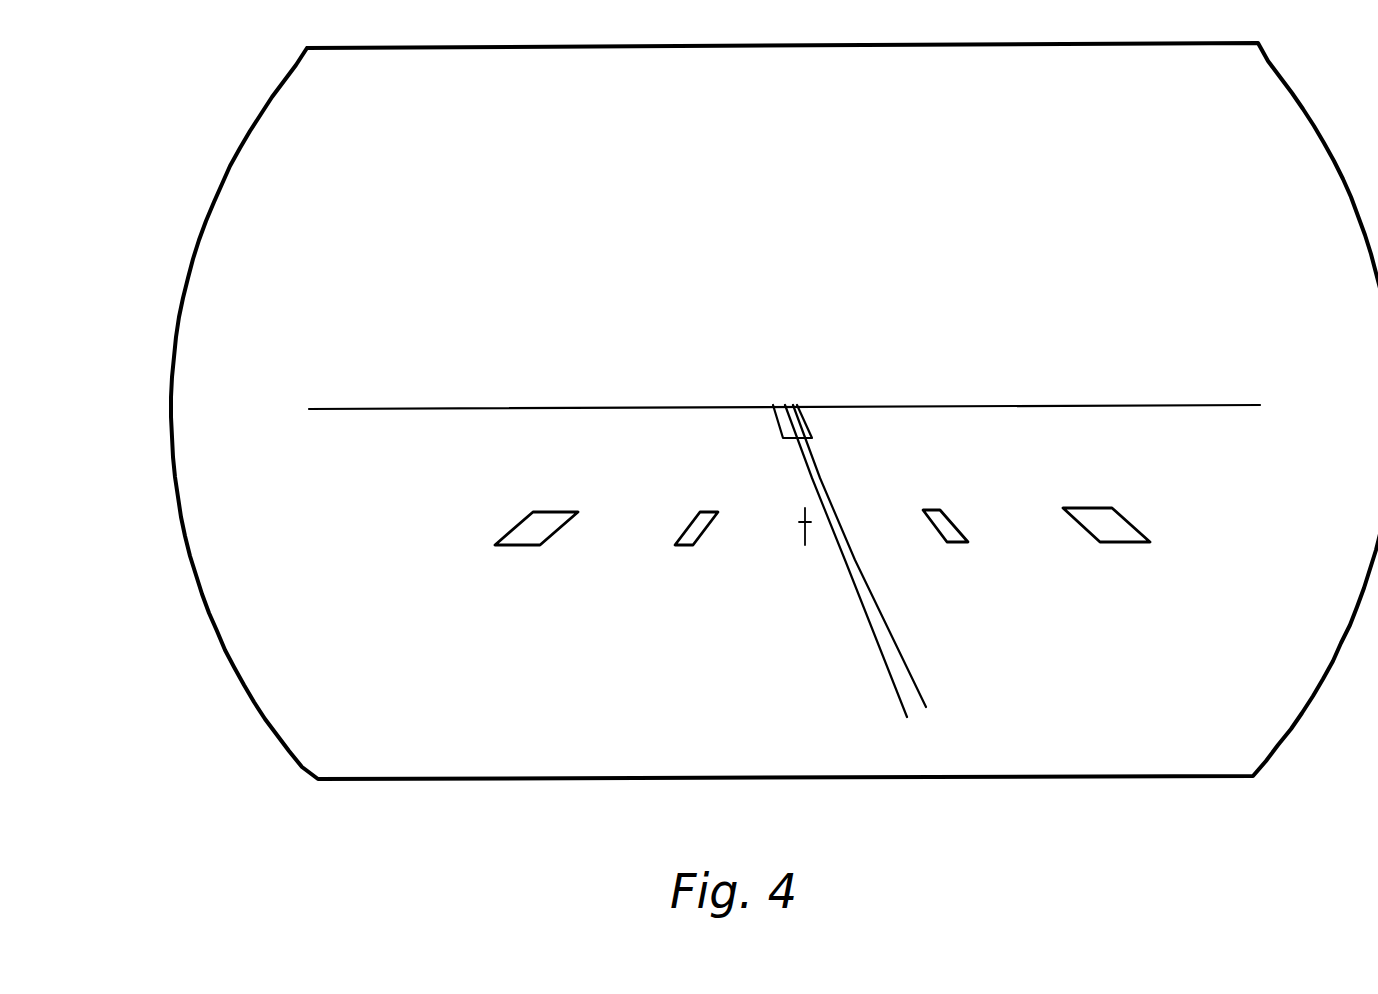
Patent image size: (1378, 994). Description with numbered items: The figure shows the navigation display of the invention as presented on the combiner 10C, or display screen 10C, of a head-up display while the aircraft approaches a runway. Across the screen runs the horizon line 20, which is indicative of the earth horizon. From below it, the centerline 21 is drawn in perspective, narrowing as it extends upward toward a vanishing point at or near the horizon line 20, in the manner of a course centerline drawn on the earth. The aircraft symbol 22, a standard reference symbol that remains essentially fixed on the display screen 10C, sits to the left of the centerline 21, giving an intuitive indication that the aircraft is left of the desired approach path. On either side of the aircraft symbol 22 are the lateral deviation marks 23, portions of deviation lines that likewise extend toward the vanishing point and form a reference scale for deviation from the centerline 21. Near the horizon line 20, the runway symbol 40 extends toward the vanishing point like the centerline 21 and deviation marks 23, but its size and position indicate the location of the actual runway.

The combiner 10C is at (1277, 80).
The horizon line 20 is at (1180, 404).
The centerline 21 is at (907, 667).
The aircraft symbol 22 is at (805, 535).
The lateral deviation marks 23 is at (520, 522).
The runway symbol 40 is at (812, 437).